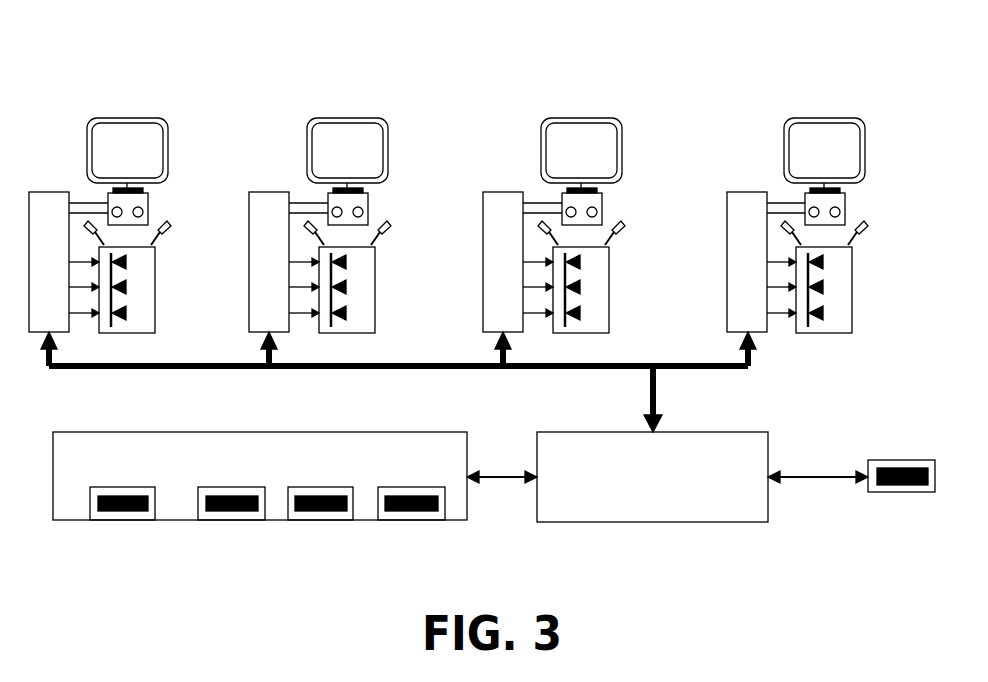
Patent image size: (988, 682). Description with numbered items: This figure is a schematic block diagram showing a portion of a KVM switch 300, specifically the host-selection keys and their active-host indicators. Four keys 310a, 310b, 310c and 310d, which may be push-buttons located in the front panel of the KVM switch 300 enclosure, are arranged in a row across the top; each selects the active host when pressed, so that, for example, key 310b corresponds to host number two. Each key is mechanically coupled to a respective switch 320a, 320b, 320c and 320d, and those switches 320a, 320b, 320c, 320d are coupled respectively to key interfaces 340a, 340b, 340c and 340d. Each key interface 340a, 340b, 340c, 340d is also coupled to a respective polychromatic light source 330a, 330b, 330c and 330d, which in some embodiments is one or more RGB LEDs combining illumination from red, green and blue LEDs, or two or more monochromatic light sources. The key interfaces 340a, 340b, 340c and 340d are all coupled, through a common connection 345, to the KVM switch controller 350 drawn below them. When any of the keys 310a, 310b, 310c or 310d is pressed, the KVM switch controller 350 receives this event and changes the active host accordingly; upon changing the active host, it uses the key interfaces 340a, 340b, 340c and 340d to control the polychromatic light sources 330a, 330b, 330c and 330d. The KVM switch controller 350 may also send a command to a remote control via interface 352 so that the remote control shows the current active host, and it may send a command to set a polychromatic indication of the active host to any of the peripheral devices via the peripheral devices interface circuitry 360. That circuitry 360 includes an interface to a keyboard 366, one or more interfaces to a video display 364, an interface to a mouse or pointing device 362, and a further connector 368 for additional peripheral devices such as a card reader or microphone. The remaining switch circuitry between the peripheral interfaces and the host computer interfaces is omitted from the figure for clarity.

The KVM switch 300 is at (134, 65).
The key 310a is at (92, 118).
The key 310b is at (312, 118).
The key 310c is at (546, 118).
The key 310d is at (790, 118).
The switch 320a is at (150, 208).
The switch 320b is at (370, 208).
The switch 320c is at (604, 208).
The switch 320d is at (848, 208).
The polychromatic light source 330a is at (156, 283).
The polychromatic light source 330b is at (376, 283).
The polychromatic light source 330c is at (610, 283).
The polychromatic light source 330d is at (854, 283).
The key interface 340a is at (42, 192).
The key interface 340b is at (262, 192).
The key interface 340c is at (496, 192).
The key interface 340d is at (740, 192).
The connection 345 is at (650, 398).
The KVM switch controller 350 is at (743, 432).
The remote control interface 352 is at (893, 458).
The peripheral devices interface circuitry 360 is at (263, 477).
The interface to a mouse or pointing device 362 is at (412, 522).
The interface to a video display 364 is at (320, 522).
The interface to keyboard 366 is at (233, 522).
The connector 368 is at (123, 522).